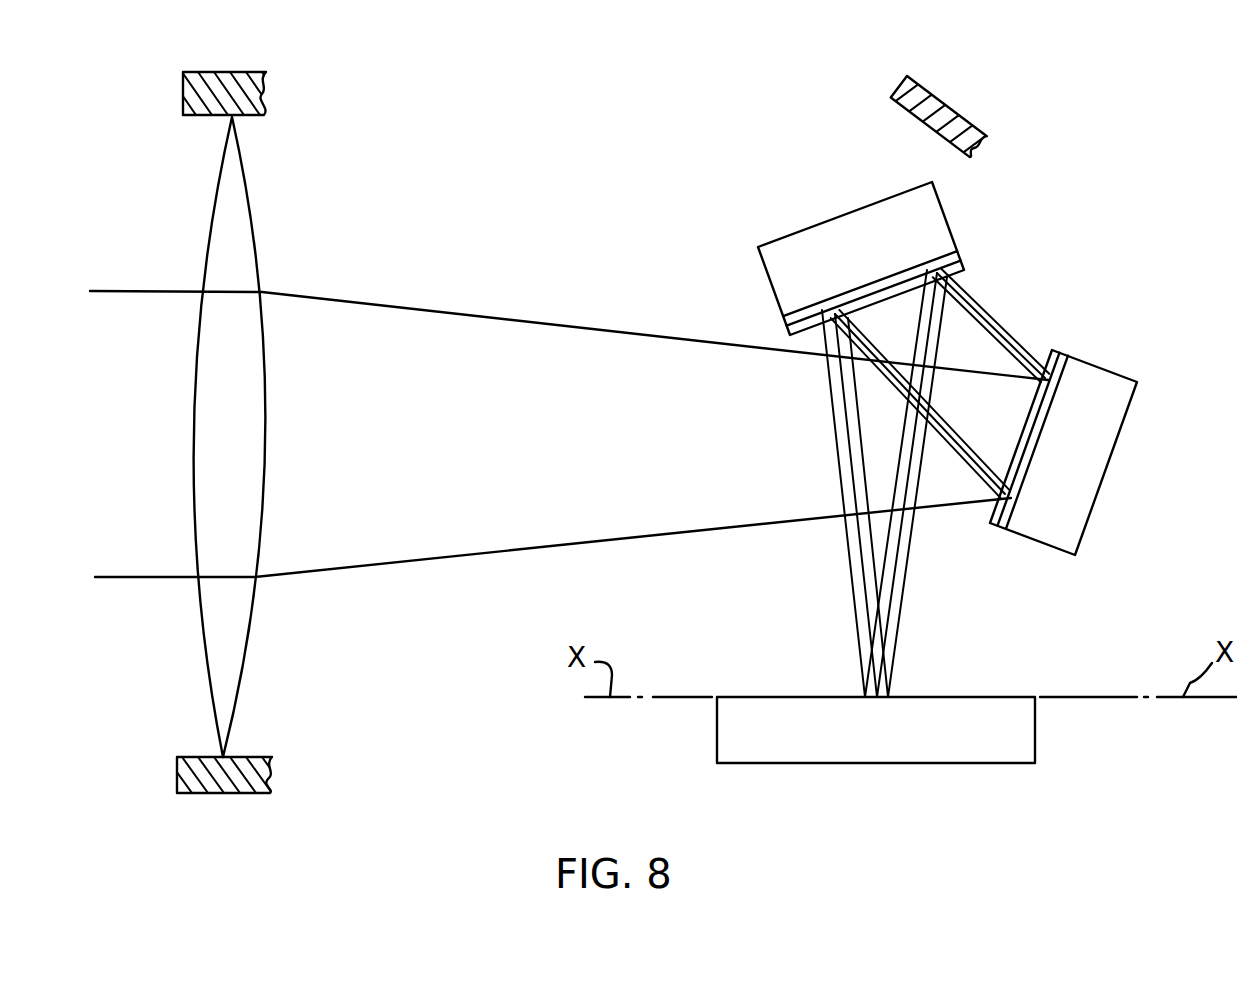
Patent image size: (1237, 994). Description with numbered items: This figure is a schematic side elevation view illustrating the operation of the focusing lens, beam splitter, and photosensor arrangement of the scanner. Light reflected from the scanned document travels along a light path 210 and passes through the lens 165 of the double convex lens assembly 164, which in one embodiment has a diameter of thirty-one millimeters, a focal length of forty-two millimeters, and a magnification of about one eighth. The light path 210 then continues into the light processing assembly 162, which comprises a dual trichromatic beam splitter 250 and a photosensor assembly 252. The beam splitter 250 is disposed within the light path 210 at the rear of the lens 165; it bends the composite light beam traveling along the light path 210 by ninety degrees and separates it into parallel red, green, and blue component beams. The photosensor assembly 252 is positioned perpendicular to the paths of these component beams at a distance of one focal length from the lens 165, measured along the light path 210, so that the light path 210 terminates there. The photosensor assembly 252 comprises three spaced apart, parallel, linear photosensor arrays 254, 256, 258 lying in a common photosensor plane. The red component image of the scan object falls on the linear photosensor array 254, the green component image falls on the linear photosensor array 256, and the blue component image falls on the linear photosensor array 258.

The light processing assembly 162 is at (960, 95).
The double convex lens assembly 164 is at (263, 68).
The lens 165 is at (233, 222).
The light path 210 is at (142, 445).
The dual trichromatic beam splitter 250 is at (1080, 357).
The photosensor assembly 252 is at (1036, 727).
The linear photosensor array 254 is at (887, 698).
The linear photosensor array 256 is at (877, 698).
The linear photosensor array 258 is at (863, 698).